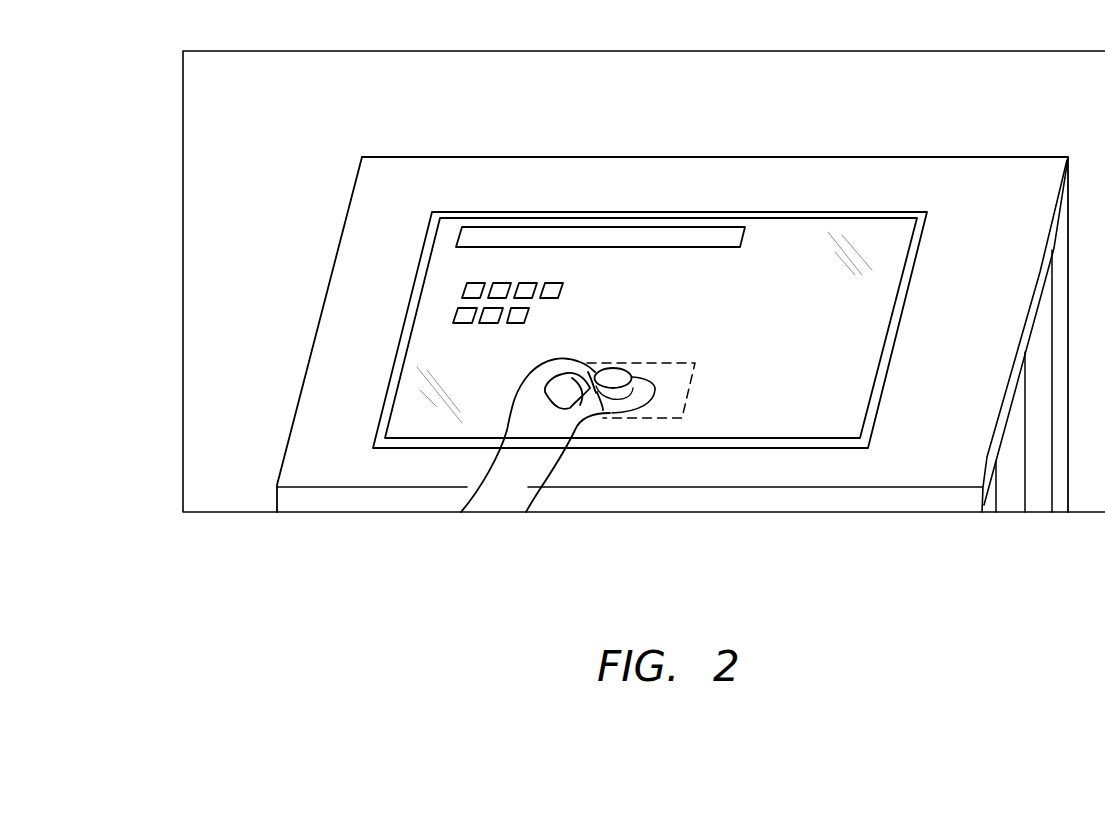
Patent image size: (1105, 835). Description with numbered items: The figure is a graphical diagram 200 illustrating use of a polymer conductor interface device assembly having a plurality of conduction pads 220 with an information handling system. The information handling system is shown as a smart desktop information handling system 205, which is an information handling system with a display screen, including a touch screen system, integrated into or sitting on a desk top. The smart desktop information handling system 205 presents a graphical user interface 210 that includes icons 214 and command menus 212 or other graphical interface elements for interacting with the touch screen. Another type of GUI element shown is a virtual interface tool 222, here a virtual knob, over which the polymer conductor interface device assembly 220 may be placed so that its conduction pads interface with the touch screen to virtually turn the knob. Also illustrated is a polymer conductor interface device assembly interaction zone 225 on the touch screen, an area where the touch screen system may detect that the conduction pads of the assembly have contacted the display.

The graphical diagram 200 is at (1059, 104).
The smart desktop information handling system 205 is at (883, 207).
The graphical user interface 210 is at (450, 270).
The command menus 212 is at (490, 226).
The icons 214 is at (463, 290).
The polymer conductor interface device assembly having a plurality of conduction pad 220 is at (614, 369).
The virtual interface tool 222 is at (657, 379).
The polymer conductor interface device assembly interaction zone 225 is at (693, 392).